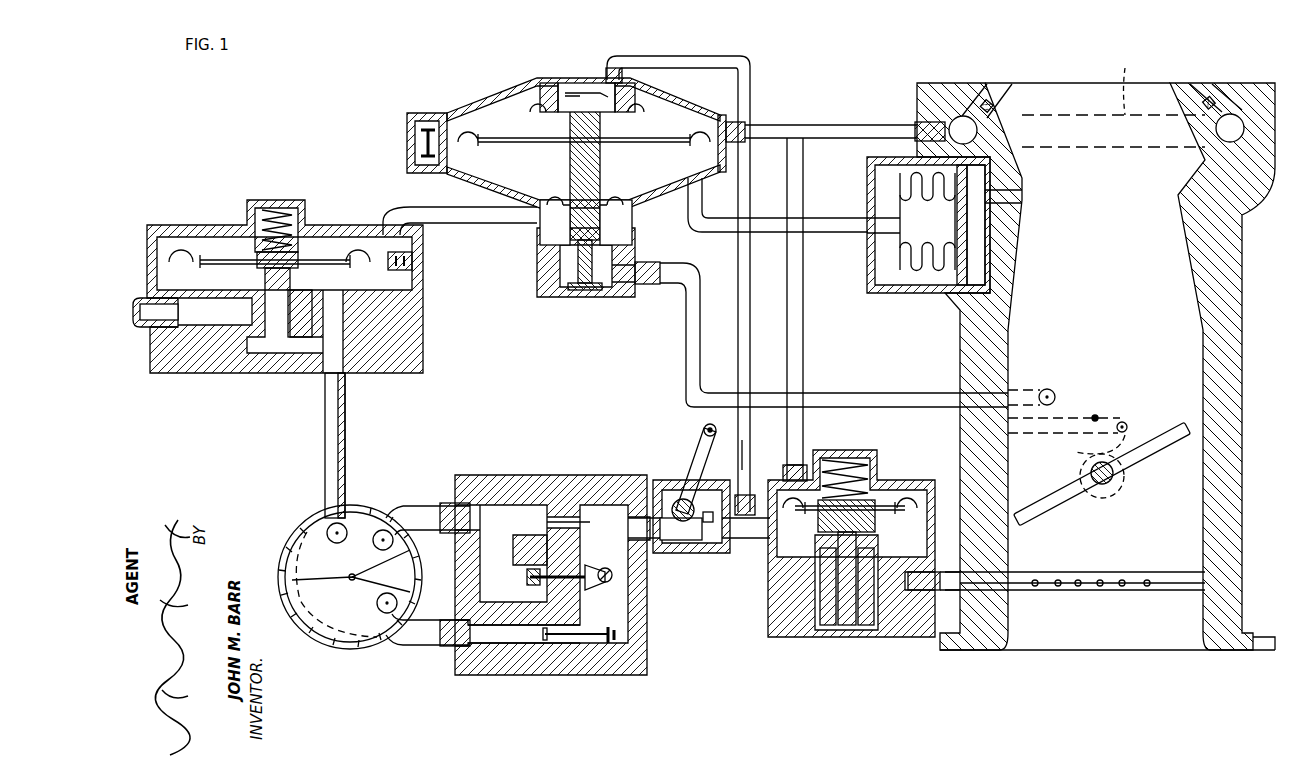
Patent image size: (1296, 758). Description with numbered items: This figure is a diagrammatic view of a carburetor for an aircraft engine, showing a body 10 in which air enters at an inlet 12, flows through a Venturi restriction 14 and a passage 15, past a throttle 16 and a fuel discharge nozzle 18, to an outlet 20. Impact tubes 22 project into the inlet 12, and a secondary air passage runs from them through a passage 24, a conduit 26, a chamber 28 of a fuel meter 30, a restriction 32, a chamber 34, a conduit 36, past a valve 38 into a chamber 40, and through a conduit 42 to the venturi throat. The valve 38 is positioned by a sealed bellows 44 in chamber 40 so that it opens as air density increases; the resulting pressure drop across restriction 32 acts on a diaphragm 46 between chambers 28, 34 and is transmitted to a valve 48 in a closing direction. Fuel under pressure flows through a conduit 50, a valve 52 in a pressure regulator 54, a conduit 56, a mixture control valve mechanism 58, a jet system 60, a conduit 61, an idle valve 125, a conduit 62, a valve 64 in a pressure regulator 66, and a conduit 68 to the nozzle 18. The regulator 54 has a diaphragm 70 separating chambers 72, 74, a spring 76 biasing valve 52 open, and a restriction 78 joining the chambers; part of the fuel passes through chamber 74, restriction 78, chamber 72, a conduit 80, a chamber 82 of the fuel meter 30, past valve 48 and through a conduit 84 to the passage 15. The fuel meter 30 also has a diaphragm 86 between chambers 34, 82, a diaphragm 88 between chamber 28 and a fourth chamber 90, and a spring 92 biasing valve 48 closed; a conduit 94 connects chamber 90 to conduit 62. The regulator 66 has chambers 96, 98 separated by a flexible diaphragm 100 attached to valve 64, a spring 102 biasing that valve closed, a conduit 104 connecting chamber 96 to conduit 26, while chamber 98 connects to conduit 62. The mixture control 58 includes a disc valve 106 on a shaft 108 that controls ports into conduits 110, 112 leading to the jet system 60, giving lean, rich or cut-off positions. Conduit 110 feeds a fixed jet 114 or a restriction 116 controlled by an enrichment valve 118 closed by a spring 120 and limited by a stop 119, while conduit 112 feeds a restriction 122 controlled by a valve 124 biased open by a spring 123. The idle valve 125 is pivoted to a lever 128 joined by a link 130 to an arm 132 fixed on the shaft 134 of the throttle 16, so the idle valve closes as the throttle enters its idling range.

The body 10 is at (962, 340).
The inlet 12 is at (1090, 109).
The Venturi restriction 14 is at (1170, 190).
The passage 15 is at (1104, 366).
The throttle 16 is at (1162, 455).
The fuel discharge nozzle 18 is at (1145, 572).
The outlet 20 is at (1134, 637).
The impact tubes 22 is at (1015, 95).
The passage 24 is at (1121, 78).
The conduit 26 is at (830, 125).
The chamber 28 is at (645, 131).
The fuel meter 30 is at (585, 181).
The restriction 32 is at (418, 147).
The chamber 34 is at (645, 169).
The conduit 36 is at (704, 225).
The valve 38 is at (878, 235).
The chamber 40 is at (900, 262).
The conduit 42 is at (1015, 203).
The sealed bellows 44 is at (937, 250).
The diaphragm 46 is at (480, 146).
The valve 48 is at (565, 272).
The conduit 50 is at (150, 320).
The valve 52 is at (290, 372).
The pressure regulator 54 is at (290, 285).
The conduit 56 is at (345, 432).
The mixture control valve mechanism 58 is at (350, 607).
The jet system 60 is at (552, 592).
The conduit 61 is at (655, 540).
The conduit 62 is at (750, 545).
The valve 64 is at (838, 612).
The pressure regulator 66 is at (864, 560).
The conduit 68 is at (945, 572).
The diaphragm 70 is at (193, 258).
The expansible chamber 72 is at (338, 258).
The expansible chamber 74 is at (338, 286).
The spring 76 is at (304, 215).
The restriction 78 is at (414, 262).
The conduit 80 is at (444, 208).
The chamber 82 is at (624, 231).
The conduit 84 is at (686, 328).
The diaphragm 86 is at (553, 202).
The diaphragm 88 is at (525, 116).
The expansible chamber 90 is at (550, 92).
The spring 92 is at (612, 70).
The conduit 94 is at (752, 86).
The expansible chamber 96 is at (885, 490).
The expansible chamber 98 is at (917, 536).
The flexible diaphragm 100 is at (925, 495).
The spring 102 is at (860, 475).
The conduit 104 is at (805, 361).
The disc valve 106 is at (364, 625).
The shaft 108 is at (352, 577).
The conduit 110 is at (440, 512).
The conduit 112 is at (450, 607).
The fixed restriction or jet 114 is at (547, 522).
The restriction 116 is at (530, 588).
The enrichment valve 118 is at (588, 580).
The stop 119 is at (607, 570).
The spring 120 is at (527, 572).
The restriction 122 is at (568, 640).
The spring 123 is at (615, 618).
The valve 124 is at (545, 634).
The idle valve 125 is at (688, 530).
The lever 128 is at (690, 492).
The link 130 is at (742, 432).
The arm 132 is at (1080, 452).
The shaft 134 is at (1110, 490).